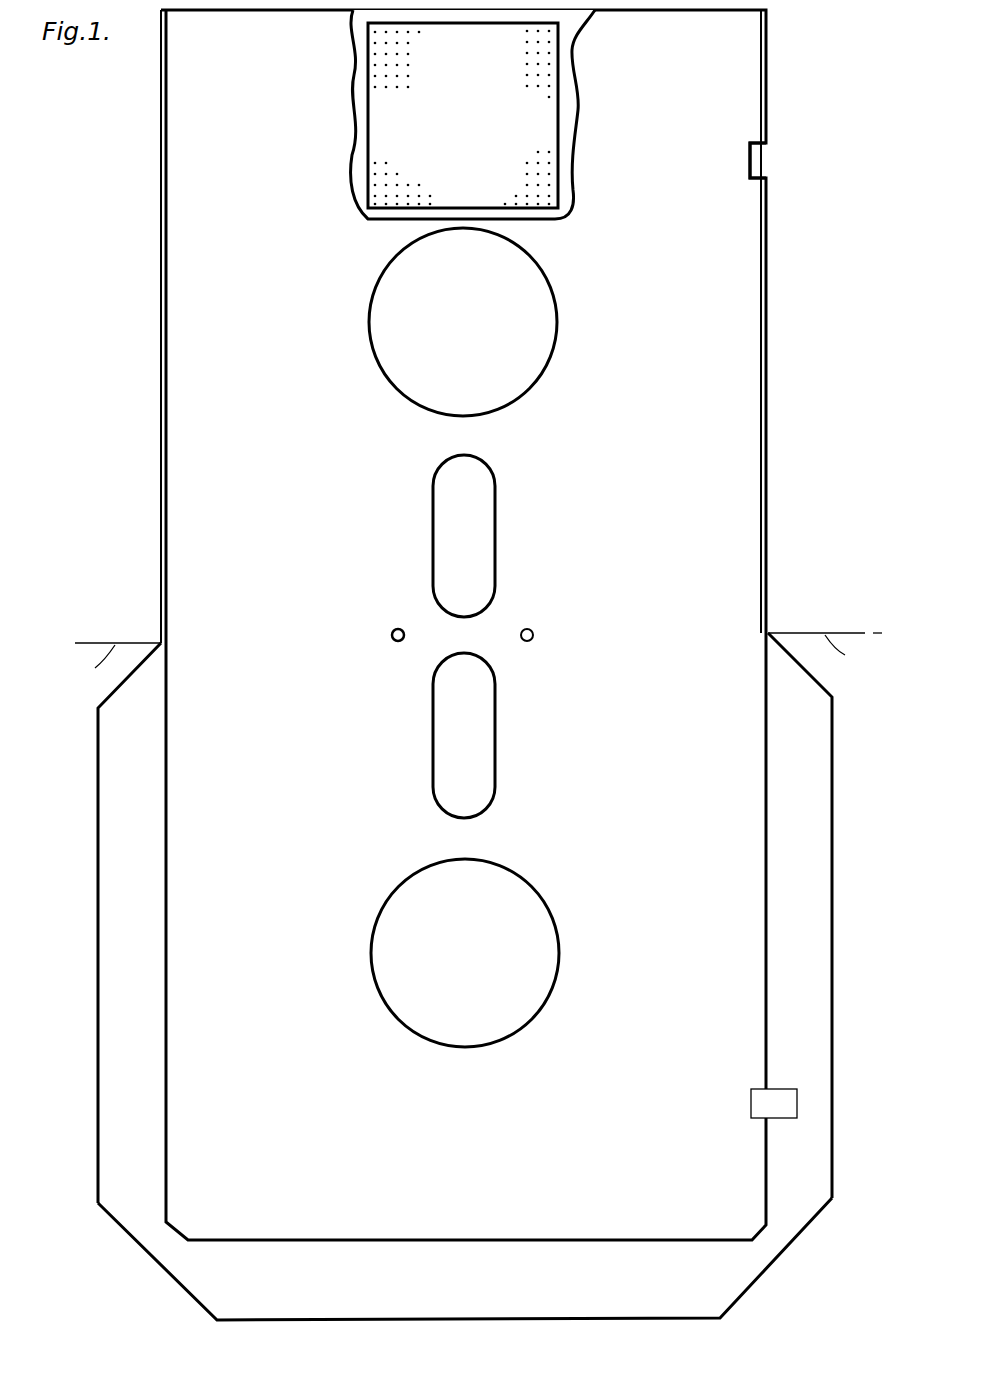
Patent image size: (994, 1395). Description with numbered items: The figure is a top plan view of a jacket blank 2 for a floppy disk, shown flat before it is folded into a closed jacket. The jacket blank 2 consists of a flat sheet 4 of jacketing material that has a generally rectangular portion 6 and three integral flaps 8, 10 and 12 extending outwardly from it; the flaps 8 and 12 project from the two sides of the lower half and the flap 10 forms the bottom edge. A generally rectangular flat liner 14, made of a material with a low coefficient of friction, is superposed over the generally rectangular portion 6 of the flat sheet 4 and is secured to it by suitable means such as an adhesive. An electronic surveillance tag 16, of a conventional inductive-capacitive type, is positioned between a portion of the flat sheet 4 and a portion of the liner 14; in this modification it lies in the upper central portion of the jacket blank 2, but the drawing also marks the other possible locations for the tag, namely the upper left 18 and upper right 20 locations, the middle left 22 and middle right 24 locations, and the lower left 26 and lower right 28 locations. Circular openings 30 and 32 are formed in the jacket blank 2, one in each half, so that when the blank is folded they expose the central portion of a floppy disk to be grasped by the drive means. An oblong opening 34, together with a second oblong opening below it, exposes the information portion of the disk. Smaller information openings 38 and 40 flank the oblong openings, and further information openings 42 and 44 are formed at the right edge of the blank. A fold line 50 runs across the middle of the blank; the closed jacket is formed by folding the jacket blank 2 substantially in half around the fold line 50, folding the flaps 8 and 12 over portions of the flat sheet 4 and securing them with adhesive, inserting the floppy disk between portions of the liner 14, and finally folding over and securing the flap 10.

The jacket blank 2 is at (148, 525).
The flat sheet of jacketing material 4 is at (161, 346).
The generally rectangular portion 6 is at (473, 114).
The flap 8 is at (142, 910).
The flap 10 is at (458, 1297).
The flap 12 is at (806, 930).
The generally rectangular flat liner 14 is at (644, 243).
The electronic surveillance tag 16 is at (488, 136).
The upper left location 18 is at (291, 166).
The upper right location 20 is at (669, 154).
The middle left location 22 is at (277, 352).
The middle right location 24 is at (655, 372).
The lower left location 26 is at (265, 484).
The lower right location 28 is at (663, 531).
The circular opening 30 is at (478, 329).
The circular opening 32 is at (480, 952).
The oblong opening 34 is at (478, 537).
The information opening 38 is at (393, 630).
The information opening 40 is at (544, 637).
The information opening 42 is at (755, 165).
The information opening 44 is at (783, 1103).
The fold line 50 is at (468, 665).